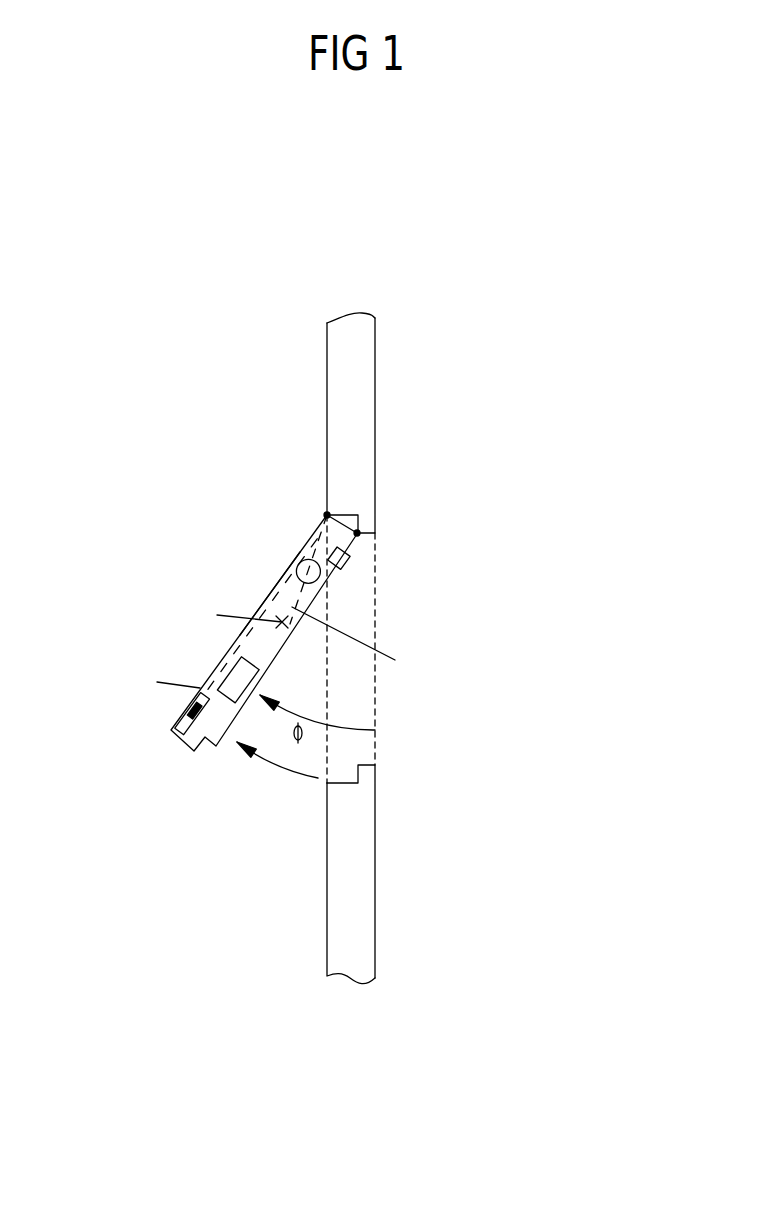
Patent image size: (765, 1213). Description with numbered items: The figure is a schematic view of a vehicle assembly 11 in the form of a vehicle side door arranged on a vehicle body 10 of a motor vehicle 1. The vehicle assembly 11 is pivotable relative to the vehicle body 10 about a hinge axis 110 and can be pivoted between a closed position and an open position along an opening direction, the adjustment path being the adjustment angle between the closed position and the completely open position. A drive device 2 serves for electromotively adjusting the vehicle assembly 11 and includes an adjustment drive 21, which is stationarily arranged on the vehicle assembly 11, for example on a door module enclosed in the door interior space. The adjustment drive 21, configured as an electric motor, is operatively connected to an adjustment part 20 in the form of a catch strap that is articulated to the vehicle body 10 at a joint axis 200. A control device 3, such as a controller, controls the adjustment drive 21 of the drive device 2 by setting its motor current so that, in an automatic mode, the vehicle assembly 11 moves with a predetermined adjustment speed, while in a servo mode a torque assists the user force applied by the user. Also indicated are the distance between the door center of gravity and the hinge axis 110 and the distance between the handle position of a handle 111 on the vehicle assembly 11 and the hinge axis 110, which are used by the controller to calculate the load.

The motor vehicle 1 is at (403, 317).
The vehicle body 10 is at (362, 475).
The hinge axis 110 is at (327, 515).
The joint axis 200 is at (357, 533).
The adjustment part 20 is at (347, 562).
The drive device 2 is at (290, 550).
The adjustment drive 21 is at (293, 563).
The vehicle assembly 11 is at (264, 609).
The control device 3 is at (228, 663).
The handle 111 is at (172, 732).